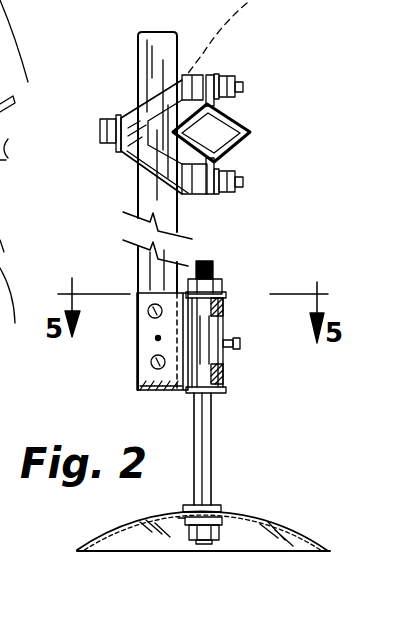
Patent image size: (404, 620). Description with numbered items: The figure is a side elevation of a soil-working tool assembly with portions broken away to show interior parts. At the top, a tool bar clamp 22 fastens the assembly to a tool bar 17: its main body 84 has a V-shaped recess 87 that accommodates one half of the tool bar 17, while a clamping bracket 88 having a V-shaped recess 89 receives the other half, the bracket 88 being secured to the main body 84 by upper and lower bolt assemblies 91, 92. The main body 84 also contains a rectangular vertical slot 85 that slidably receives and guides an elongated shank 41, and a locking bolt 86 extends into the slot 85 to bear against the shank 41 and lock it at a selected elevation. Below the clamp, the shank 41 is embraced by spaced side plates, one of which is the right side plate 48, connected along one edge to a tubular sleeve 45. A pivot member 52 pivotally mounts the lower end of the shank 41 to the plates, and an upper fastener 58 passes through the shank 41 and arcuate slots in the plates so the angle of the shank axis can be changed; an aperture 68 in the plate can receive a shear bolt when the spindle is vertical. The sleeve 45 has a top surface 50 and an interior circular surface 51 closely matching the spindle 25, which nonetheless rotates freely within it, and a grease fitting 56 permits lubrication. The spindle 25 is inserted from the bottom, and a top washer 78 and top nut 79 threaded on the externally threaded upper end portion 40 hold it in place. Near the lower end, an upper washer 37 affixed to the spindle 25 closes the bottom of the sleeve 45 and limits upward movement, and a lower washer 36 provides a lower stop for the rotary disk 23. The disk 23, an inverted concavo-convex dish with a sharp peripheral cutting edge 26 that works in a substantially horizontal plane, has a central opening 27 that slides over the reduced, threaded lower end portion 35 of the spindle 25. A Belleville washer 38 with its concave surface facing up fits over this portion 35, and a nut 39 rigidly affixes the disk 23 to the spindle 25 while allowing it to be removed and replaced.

The tool bar 17 is at (225, 117).
The tool bar clamp 22 is at (0, 175).
The rotary disk 23 is at (137, 525).
The spindle 25 is at (210, 432).
The peripheral cutting edge 26 is at (77, 551).
The central opening 27 is at (210, 501).
The lower end portion 35 is at (200, 534).
The lower washer 36 is at (220, 508).
The upper washer 37 is at (225, 393).
The Belleville washer 38 is at (180, 522).
The nut 39 is at (222, 534).
The upper end portion 40 is at (204, 262).
The shank 41 is at (143, 195).
The sleeve 45 is at (227, 332).
The right side plate 48 is at (138, 358).
The top surface 50 is at (225, 305).
The interior circular surface 51 is at (225, 385).
The pivot member 52 is at (147, 393).
The grease fitting 56 is at (233, 348).
The upper fastener 58 is at (150, 317).
The aperture 68 is at (156, 338).
The top washer 78 is at (228, 292).
The top nut 79 is at (223, 284).
The main body 84 is at (140, 97).
The vertical slot 85 is at (248, 7).
The locking bolt 86 is at (107, 120).
The V-shaped recess 87 is at (178, 150).
The clamping bracket 88 is at (245, 143).
The V-shaped recess 89 is at (242, 117).
The upper bolt assembly 91 is at (230, 77).
The lower bolt assembly 92 is at (232, 192).